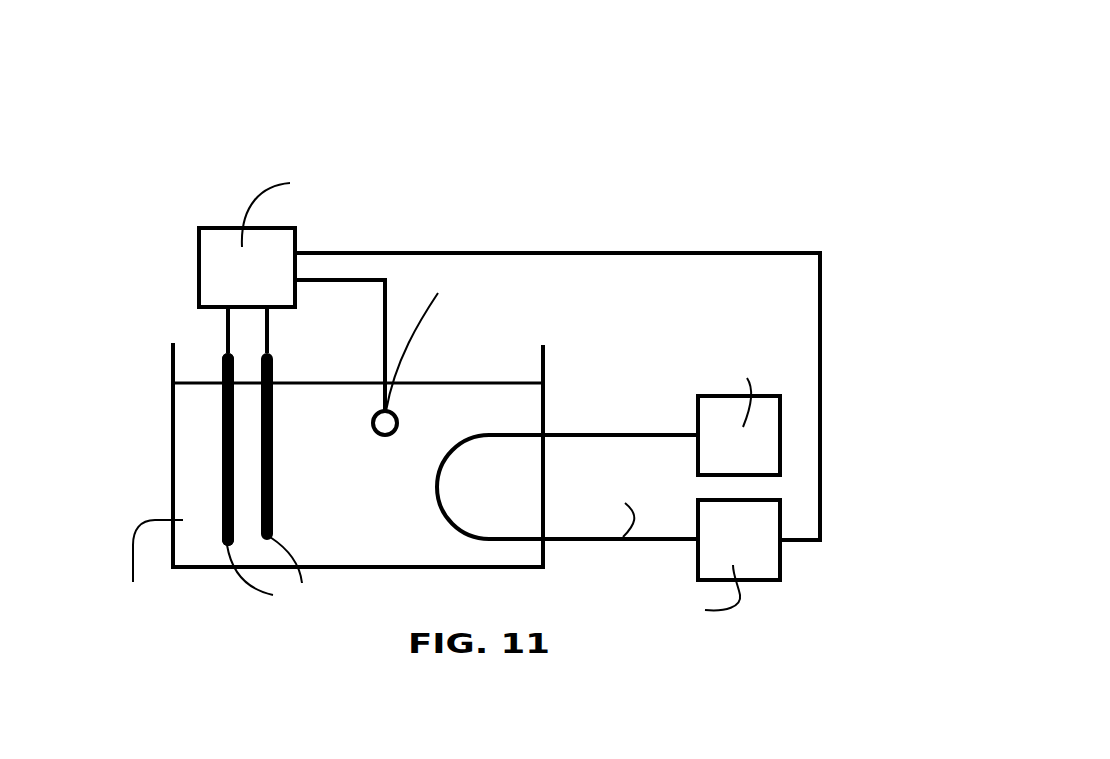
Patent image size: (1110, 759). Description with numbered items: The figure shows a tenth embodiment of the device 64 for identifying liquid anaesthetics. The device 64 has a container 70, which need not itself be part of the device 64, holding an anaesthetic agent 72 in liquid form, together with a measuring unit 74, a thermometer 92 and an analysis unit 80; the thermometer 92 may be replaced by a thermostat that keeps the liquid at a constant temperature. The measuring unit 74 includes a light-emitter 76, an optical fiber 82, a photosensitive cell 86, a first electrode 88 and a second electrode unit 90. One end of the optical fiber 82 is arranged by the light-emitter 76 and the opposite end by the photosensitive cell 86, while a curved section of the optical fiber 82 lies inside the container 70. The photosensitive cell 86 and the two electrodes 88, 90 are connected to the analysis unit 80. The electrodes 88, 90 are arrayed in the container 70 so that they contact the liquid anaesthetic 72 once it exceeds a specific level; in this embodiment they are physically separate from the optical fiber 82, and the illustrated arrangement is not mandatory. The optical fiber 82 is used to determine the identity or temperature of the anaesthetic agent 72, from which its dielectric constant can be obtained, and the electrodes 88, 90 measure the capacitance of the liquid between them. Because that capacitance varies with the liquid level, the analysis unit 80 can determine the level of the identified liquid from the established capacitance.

The device 64 is at (344, 112).
The measuring unit 74 is at (188, 190).
The analysis unit 80 is at (509, 352).
The container 70 is at (545, 358).
The anaesthetic agent 72 is at (517, 410).
The second electrode unit 90 is at (275, 435).
The first electrode 88 is at (218, 448).
The thermometer 92 is at (398, 418).
The optical fiber 82 is at (437, 488).
The light-emitter 76 is at (723, 398).
The photosensitive cell 86 is at (674, 571).